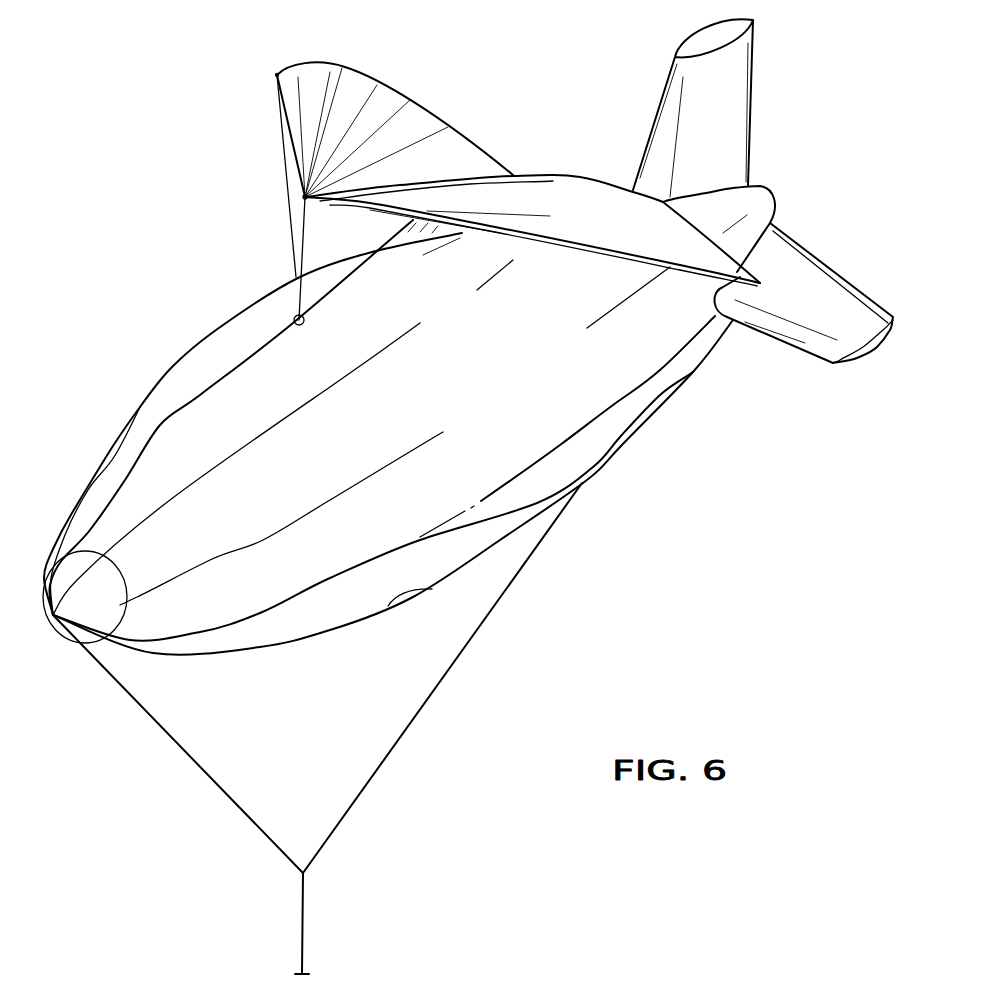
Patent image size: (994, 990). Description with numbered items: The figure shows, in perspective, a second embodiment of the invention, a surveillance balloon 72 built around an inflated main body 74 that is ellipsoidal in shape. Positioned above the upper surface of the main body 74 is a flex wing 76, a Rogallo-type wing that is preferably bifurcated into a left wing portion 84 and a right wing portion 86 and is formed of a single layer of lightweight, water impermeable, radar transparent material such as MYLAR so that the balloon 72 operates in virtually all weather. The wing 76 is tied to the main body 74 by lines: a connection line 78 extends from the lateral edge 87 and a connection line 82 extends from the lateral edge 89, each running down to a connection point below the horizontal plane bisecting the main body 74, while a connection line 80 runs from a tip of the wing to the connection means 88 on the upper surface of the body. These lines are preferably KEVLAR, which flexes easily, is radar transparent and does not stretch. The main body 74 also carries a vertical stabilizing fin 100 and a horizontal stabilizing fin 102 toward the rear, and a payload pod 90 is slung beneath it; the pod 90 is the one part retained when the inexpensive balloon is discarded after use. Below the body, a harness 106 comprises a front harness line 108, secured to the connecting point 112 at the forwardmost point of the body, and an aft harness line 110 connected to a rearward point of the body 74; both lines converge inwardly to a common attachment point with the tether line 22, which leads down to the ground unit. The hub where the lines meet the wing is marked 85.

The tether line 22 is at (302, 940).
The surveillance balloon 72 is at (474, 374).
The inflated main body 74 is at (500, 384).
The flex wing 76 is at (363, 112).
The connection line 78 is at (287, 218).
The connection line 80 is at (306, 252).
The connection line 82 is at (733, 327).
The left wing portion 84 is at (640, 239).
The hub joint 85 is at (303, 196).
The right wing portion 86 is at (375, 126).
The lateral edge 87 is at (277, 76).
The connection means 88 is at (306, 324).
The lateral edge 89 is at (797, 266).
The payload pod 90 is at (410, 607).
The vertical stabilizing fin 100 is at (740, 100).
The horizontal stabilizing fin 102 is at (820, 293).
The harness 106 is at (321, 678).
The front harness line 108 is at (174, 737).
The aft harness line 110 is at (415, 718).
The connecting point 112 is at (53, 616).